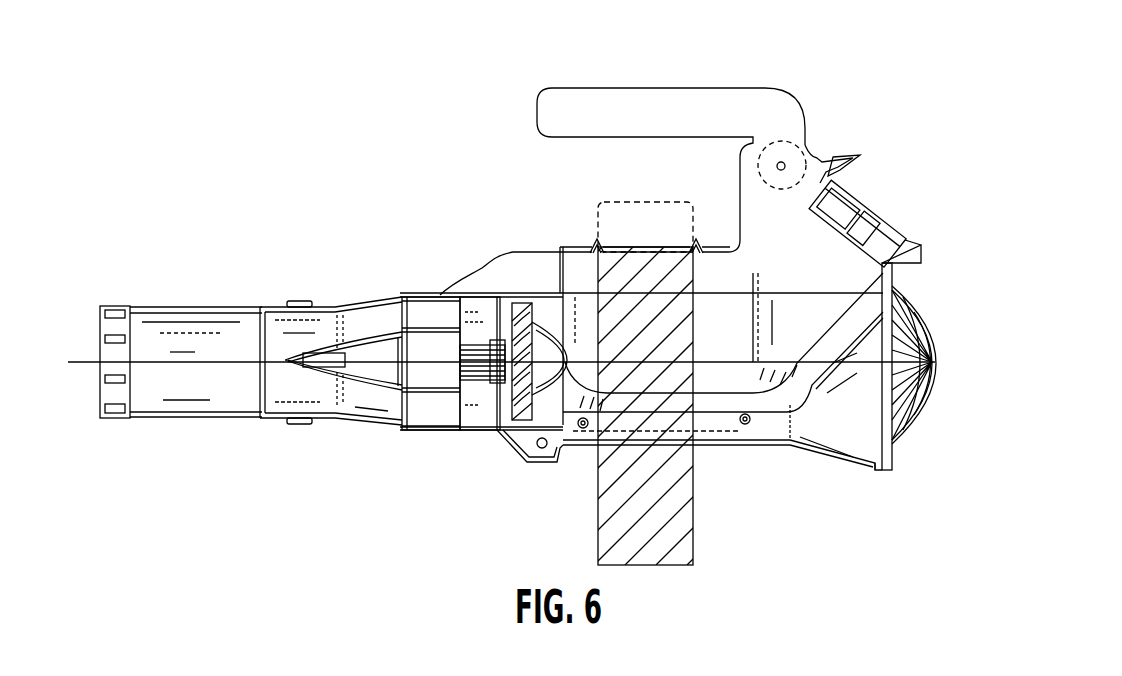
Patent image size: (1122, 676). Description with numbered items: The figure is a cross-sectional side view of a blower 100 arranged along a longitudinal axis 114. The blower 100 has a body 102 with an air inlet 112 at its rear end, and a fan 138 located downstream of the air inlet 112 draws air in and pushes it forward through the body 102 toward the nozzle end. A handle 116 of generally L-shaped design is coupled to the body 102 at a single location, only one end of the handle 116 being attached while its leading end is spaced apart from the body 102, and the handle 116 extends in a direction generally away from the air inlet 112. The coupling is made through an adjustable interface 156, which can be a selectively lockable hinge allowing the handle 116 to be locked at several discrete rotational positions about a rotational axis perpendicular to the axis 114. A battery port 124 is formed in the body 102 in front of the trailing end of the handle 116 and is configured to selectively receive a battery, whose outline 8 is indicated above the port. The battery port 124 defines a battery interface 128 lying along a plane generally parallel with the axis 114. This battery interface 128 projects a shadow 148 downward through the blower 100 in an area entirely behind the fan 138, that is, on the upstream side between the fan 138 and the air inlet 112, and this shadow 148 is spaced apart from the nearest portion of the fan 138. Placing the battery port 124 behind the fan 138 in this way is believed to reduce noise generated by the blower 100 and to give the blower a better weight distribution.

The blower 100 is at (396, 174).
The body 102 is at (492, 258).
The air inlet 112 is at (940, 366).
The axis 114 is at (203, 360).
The handle 116 is at (663, 103).
The battery port 124 is at (682, 242).
The battery interface 128 is at (602, 243).
The fan 138 is at (555, 450).
The shadow 148 is at (693, 547).
The adjustable interface 156 is at (768, 167).
The battery outline 8 is at (627, 198).